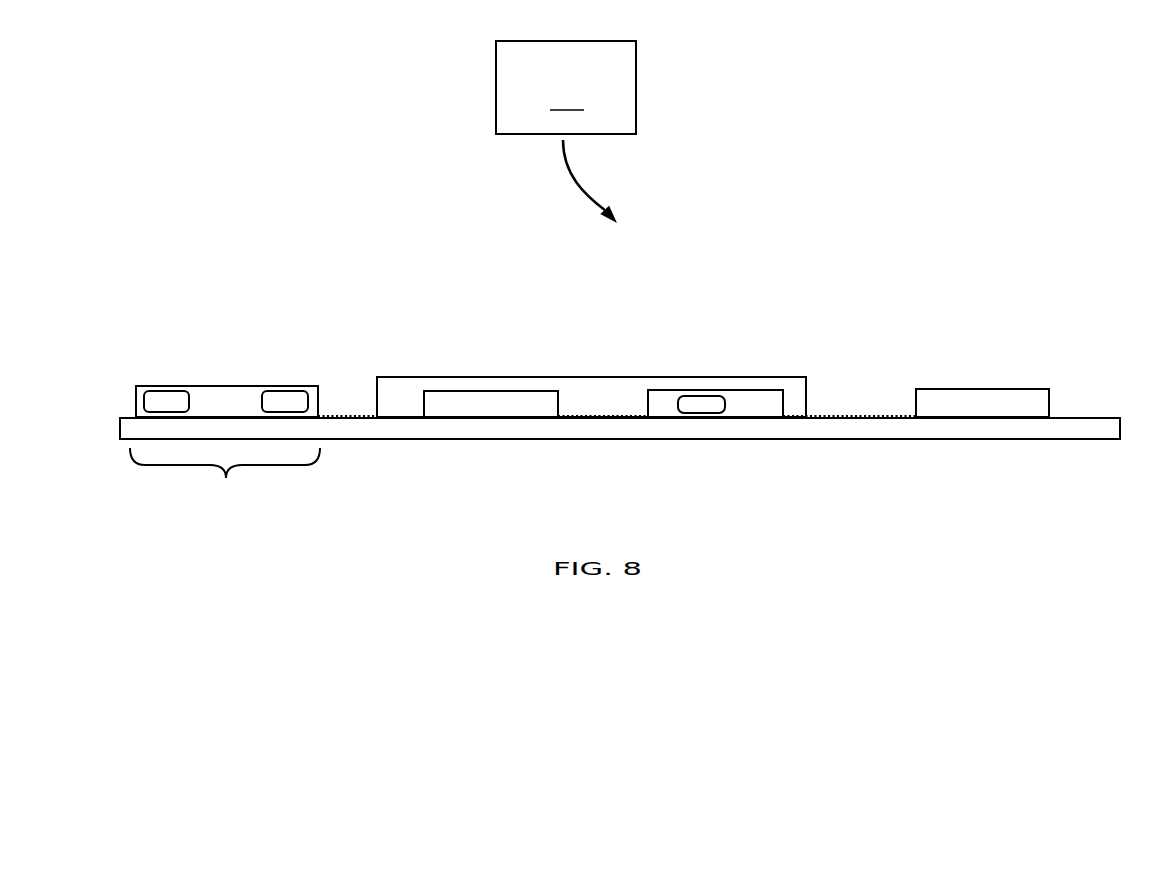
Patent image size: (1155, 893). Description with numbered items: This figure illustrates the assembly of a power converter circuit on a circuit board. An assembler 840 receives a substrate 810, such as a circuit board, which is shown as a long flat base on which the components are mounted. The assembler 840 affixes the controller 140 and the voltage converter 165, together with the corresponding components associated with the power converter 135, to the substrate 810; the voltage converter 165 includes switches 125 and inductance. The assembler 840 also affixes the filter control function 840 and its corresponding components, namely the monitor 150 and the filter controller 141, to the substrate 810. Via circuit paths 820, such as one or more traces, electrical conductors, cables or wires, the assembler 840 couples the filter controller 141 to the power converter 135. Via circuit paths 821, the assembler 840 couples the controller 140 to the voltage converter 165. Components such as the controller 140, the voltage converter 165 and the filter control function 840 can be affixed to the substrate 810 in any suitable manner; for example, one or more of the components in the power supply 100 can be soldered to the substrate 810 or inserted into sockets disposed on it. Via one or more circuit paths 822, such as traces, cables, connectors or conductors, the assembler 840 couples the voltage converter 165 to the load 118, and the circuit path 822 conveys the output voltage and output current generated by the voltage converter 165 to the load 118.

The power supply 100 is at (184, 262).
The load 118 is at (1005, 388).
The switches 125 is at (697, 407).
The power converter 135 is at (420, 377).
The controller 140 is at (482, 391).
The filter controller 141 is at (285, 391).
The monitor 150 is at (162, 391).
The voltage converter 165 is at (734, 388).
The substrate 810 is at (1080, 440).
The circuit paths 820 is at (343, 413).
The circuit paths 821 is at (603, 412).
The circuit paths 822 is at (850, 410).
The assembler 840 is at (243, 578).